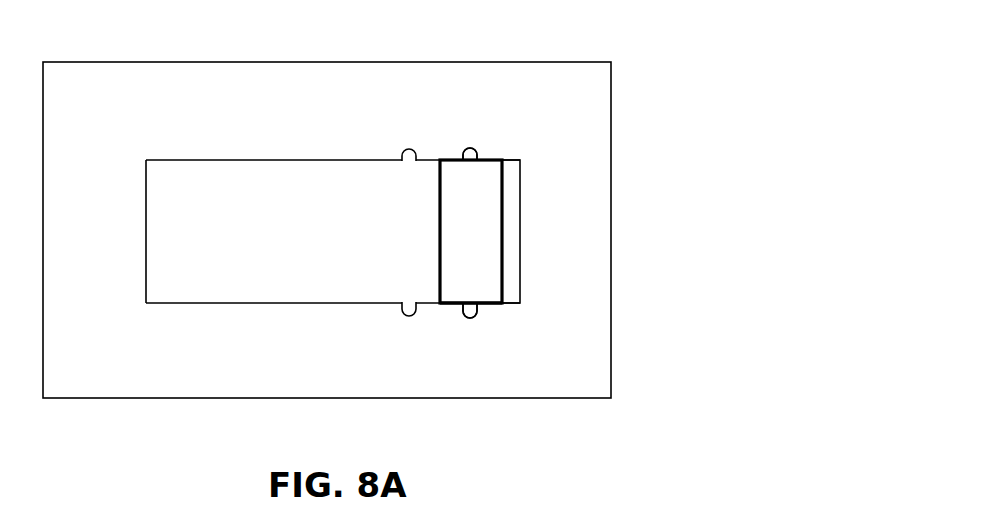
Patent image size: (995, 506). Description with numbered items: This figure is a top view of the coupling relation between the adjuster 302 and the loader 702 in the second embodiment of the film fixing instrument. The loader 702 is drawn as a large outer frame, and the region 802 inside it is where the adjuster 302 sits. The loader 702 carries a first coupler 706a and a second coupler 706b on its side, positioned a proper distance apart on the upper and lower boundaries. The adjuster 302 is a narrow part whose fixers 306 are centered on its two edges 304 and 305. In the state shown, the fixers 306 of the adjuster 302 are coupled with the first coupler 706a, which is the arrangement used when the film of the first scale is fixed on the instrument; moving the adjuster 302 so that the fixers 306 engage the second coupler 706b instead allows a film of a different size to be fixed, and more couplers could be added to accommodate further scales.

The loader 702 is at (611, 108).
The die attach region 802 is at (259, 211).
The adjuster 302 is at (500, 230).
The edge of the adjuster 304 is at (491, 159).
The edge of the adjuster 305 is at (493, 306).
The fixers 306 is at (467, 148).
The first coupler 706a is at (472, 148).
The second coupler 706b is at (409, 149).